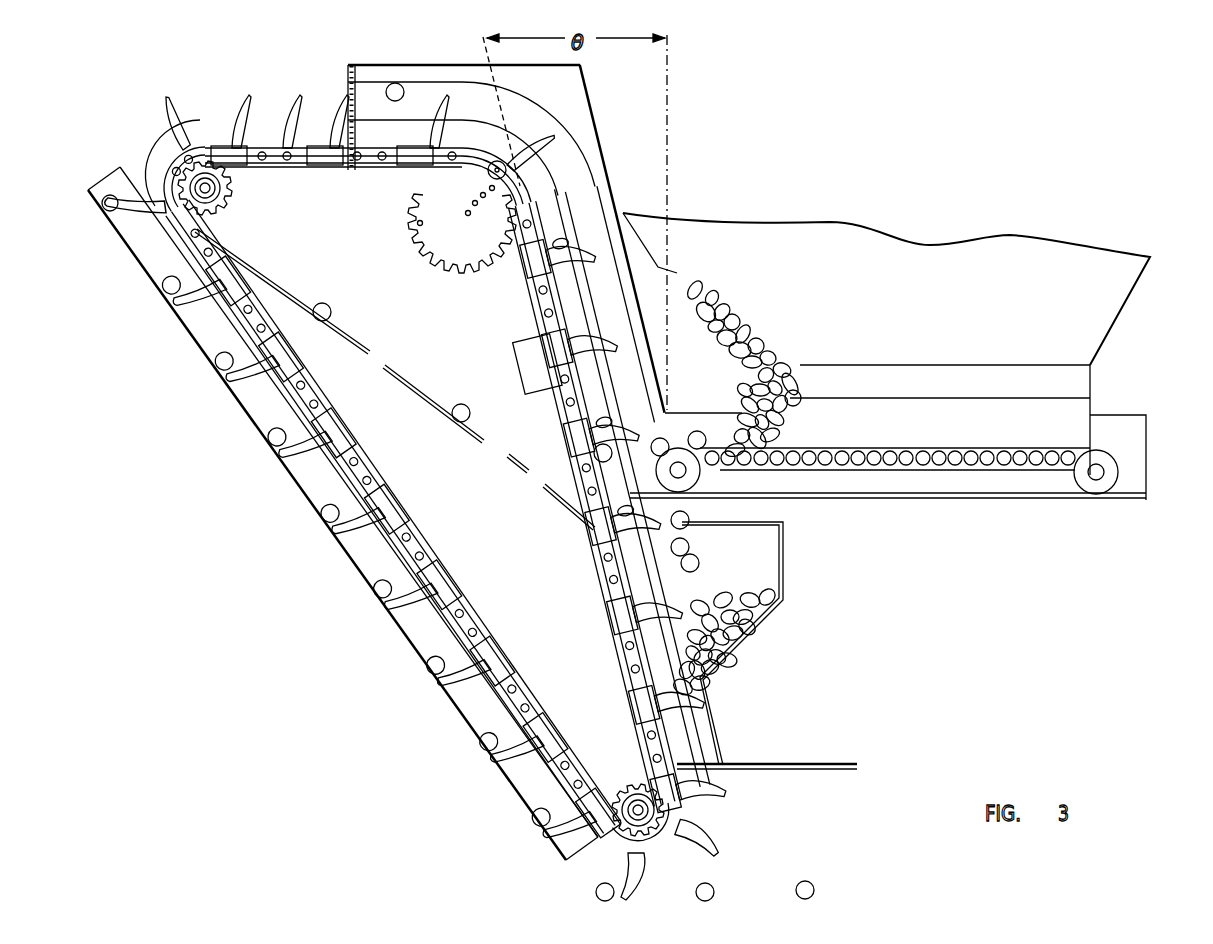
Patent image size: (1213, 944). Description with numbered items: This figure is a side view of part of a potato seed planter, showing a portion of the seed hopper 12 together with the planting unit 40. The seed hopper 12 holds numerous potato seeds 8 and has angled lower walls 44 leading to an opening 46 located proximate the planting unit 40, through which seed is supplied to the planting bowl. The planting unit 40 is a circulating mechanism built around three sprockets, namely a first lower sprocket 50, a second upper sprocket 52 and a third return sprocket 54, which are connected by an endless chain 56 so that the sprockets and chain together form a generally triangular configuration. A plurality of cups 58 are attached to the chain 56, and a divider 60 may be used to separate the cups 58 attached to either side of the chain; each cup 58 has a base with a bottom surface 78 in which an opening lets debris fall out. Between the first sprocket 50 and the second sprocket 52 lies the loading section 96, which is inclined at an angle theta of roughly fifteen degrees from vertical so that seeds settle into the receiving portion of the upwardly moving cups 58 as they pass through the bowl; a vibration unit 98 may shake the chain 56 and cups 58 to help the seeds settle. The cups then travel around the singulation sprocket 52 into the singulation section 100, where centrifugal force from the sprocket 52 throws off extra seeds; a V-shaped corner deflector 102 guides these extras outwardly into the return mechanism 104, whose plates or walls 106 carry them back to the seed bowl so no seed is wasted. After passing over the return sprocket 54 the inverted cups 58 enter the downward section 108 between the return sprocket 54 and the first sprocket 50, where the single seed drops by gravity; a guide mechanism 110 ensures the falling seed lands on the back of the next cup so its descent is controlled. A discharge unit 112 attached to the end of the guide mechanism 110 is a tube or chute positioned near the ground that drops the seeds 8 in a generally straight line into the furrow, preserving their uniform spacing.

The potato seeds 8 is at (212, 357).
The seed hopper 12 is at (911, 321).
The planting unit 40 is at (272, 92).
The angled lower walls 44 is at (1103, 300).
The opening 46 is at (633, 398).
The first lower sprocket 50 is at (655, 797).
The second upper sprocket 52 is at (447, 262).
The third return sprocket 54 is at (222, 220).
The chain 56 is at (340, 472).
The cups 58 is at (400, 600).
The divider 60 is at (662, 671).
The bottom surface 78 is at (292, 443).
The loading section 96 is at (535, 482).
The vibration unit 98 is at (522, 368).
The singulation section 100 is at (370, 185).
The corner deflector 102 is at (530, 107).
The return mechanism 104 is at (343, 432).
The plates or walls 106 is at (536, 438).
The downward section 108 is at (340, 388).
The guide mechanism 110 is at (243, 412).
The discharge unit 112 is at (548, 884).